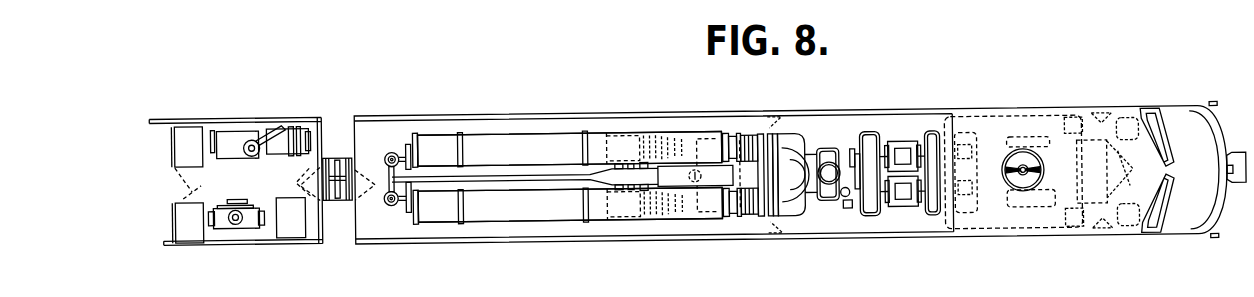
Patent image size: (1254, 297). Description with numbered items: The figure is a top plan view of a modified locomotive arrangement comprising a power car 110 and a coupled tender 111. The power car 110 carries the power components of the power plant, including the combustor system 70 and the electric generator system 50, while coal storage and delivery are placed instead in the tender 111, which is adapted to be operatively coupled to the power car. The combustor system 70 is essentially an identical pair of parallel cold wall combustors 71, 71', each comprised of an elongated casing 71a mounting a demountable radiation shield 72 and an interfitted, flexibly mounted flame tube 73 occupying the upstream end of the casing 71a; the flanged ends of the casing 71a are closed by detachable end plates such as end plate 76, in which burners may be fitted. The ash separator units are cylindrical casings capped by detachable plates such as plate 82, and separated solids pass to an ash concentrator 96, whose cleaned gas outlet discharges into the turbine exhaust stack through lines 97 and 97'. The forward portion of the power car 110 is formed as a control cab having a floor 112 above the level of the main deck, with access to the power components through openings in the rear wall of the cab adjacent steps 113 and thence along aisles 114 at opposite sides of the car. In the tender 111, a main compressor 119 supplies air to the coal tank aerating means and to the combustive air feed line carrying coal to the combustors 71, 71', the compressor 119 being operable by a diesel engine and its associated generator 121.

The tender 111 is at (268, 115).
The generator 121 is at (239, 153).
The main compressor 119 is at (233, 229).
The ash concentrator 96 is at (386, 157).
The line 97 is at (496, 196).
The line 97' is at (406, 231).
The detachable plate 82 is at (406, 152).
The detachable end plate 76 is at (417, 134).
The combustor system 70 is at (531, 146).
The cold wall combustor 71 is at (570, 233).
The cold wall combustor 71' is at (569, 128).
The flame tube 73 is at (649, 134).
The radiation shield 72 is at (662, 142).
The elongated casing 71a is at (676, 134).
The aisle 114 is at (745, 126).
The power car 110 is at (879, 113).
The electric generator system 50 is at (914, 231).
The steps 113 is at (1079, 124).
The floor 112 is at (1152, 178).